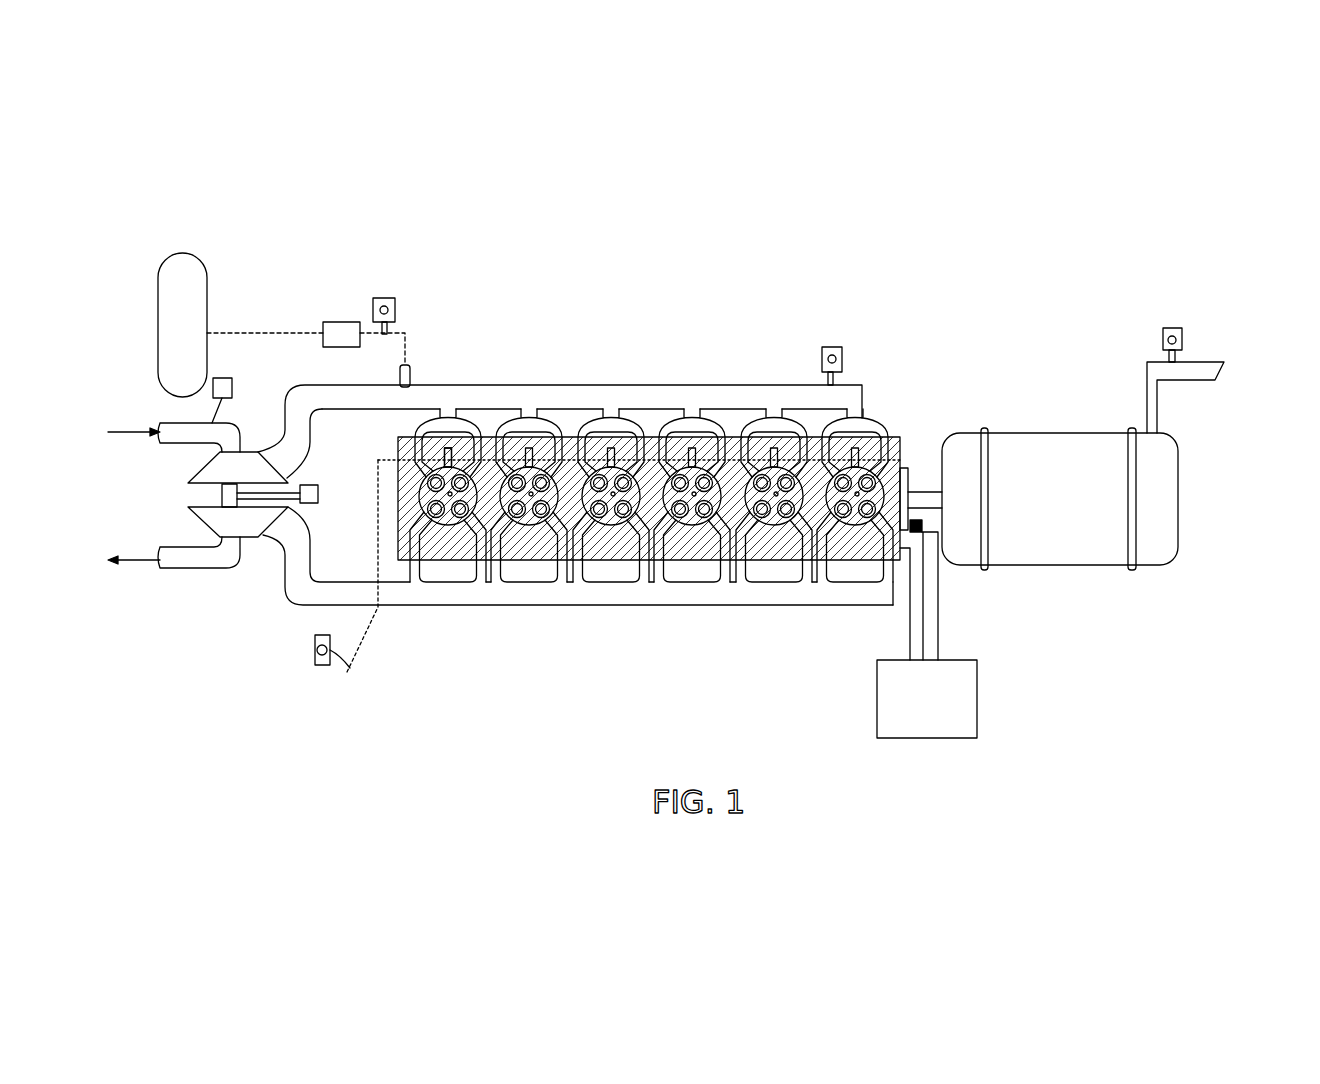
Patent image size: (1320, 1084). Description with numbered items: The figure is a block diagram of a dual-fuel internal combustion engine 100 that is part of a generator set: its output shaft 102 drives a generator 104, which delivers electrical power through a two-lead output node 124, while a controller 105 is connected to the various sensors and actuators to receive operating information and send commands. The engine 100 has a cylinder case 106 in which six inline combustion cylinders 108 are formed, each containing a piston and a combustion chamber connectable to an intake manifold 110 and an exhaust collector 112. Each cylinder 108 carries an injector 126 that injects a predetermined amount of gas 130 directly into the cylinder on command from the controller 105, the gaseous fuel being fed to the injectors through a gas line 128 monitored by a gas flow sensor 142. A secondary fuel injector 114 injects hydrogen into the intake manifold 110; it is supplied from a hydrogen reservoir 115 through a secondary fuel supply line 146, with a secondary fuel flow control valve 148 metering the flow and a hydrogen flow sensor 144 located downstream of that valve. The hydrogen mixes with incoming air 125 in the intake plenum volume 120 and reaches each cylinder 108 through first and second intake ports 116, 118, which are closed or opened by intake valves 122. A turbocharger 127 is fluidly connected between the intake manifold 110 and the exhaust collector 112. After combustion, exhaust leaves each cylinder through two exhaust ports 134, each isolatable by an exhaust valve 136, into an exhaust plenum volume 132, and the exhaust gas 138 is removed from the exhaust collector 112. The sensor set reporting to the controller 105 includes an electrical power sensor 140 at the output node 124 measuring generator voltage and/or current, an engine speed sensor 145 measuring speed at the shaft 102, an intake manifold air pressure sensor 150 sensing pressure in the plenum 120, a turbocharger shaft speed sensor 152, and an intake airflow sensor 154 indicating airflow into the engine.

The internal combustion engine 100 is at (600, 250).
The output shaft 102 is at (915, 498).
The generator 104 is at (1036, 516).
The controller 105 is at (913, 711).
The cylinder case 106 is at (398, 551).
The combustion cylinders 108 is at (419, 483).
The intake manifold 110 is at (393, 392).
The exhaust collector 112 is at (503, 604).
The secondary fuel injector 114 is at (407, 365).
The hydrogen reservoir 115 is at (168, 341).
The first intake port 116 is at (413, 452).
The second intake port 118 is at (479, 447).
The intake plenum volume 120 is at (448, 402).
The intake valves 122 is at (426, 509).
The output node 124 is at (1230, 374).
The incoming air 125 is at (120, 431).
The injector 126 is at (448, 449).
The turbocharger 127 is at (176, 497).
The gas line 128 is at (350, 671).
The gas 130 is at (327, 684).
The exhaust plenum volume 132 is at (662, 600).
The exhaust ports 134 is at (413, 567).
The exhaust valves 136 is at (438, 516).
The exhaust gas 138 is at (127, 565).
The electrical power sensor 140 is at (1163, 340).
The gas flow sensor 142 is at (315, 650).
The hydrogen flow sensor 144 is at (378, 297).
The engine speed sensor 145 is at (925, 528).
The secondary fuel supply line 146 is at (247, 332).
The secondary fuel flow control valve 148 is at (338, 321).
The intake manifold air pressure sensor 150 is at (834, 346).
The turbocharger shaft speed sensor 152 is at (313, 484).
The intake airflow sensor 154 is at (232, 387).